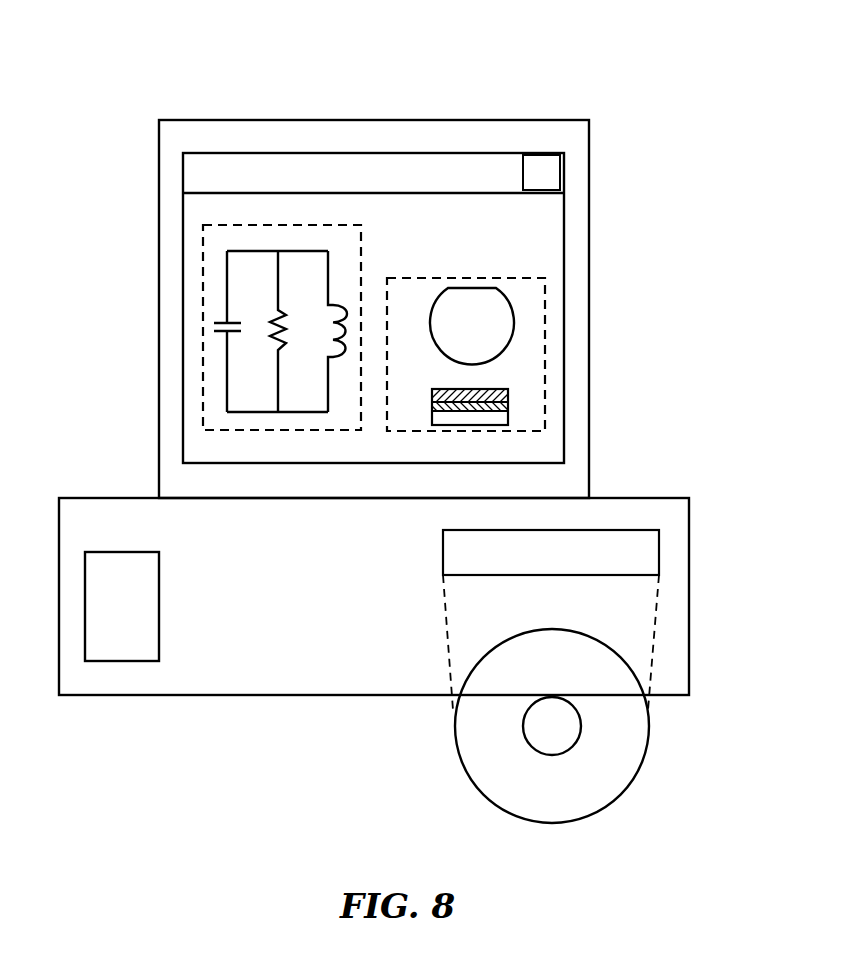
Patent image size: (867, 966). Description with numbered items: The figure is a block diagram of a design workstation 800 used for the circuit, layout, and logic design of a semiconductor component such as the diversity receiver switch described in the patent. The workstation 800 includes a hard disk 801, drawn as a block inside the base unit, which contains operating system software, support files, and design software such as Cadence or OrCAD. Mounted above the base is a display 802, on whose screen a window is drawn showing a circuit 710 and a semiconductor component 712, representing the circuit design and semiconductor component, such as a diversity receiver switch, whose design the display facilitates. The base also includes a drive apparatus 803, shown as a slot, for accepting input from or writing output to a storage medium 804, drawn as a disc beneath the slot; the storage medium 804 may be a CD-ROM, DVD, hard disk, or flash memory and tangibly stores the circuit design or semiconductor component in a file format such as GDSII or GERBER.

The design workstation 800 is at (103, 60).
The display 802 is at (545, 120).
The resonant circuit graphic 710 is at (361, 245).
The object and layered structure graphic 712 is at (442, 277).
The hard disk 801 is at (160, 578).
The drive apparatus 803 is at (647, 530).
The storage medium 804 is at (548, 823).